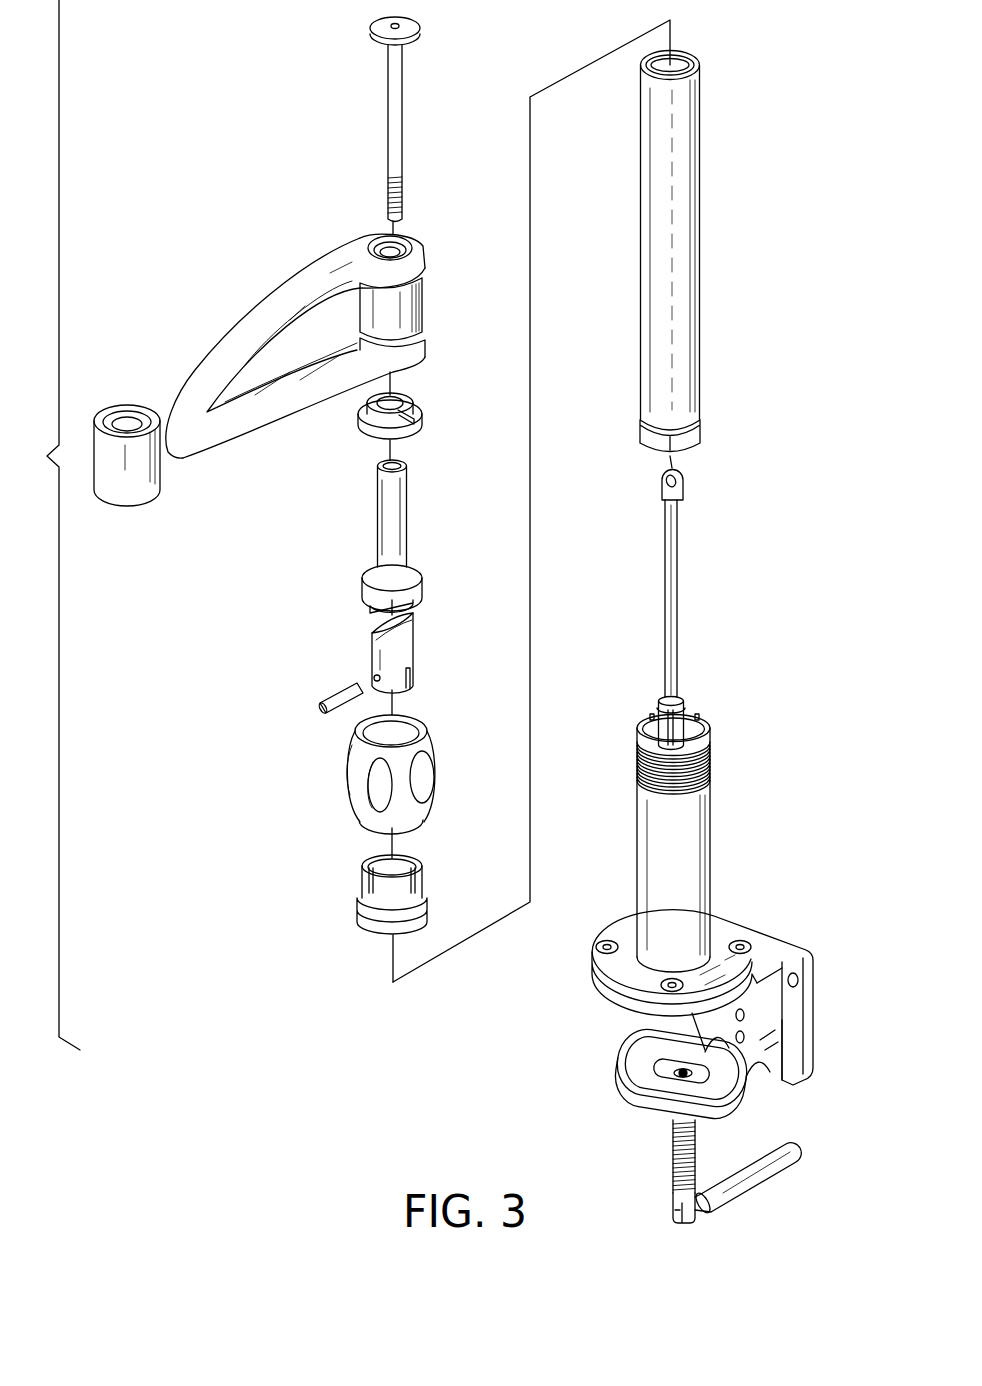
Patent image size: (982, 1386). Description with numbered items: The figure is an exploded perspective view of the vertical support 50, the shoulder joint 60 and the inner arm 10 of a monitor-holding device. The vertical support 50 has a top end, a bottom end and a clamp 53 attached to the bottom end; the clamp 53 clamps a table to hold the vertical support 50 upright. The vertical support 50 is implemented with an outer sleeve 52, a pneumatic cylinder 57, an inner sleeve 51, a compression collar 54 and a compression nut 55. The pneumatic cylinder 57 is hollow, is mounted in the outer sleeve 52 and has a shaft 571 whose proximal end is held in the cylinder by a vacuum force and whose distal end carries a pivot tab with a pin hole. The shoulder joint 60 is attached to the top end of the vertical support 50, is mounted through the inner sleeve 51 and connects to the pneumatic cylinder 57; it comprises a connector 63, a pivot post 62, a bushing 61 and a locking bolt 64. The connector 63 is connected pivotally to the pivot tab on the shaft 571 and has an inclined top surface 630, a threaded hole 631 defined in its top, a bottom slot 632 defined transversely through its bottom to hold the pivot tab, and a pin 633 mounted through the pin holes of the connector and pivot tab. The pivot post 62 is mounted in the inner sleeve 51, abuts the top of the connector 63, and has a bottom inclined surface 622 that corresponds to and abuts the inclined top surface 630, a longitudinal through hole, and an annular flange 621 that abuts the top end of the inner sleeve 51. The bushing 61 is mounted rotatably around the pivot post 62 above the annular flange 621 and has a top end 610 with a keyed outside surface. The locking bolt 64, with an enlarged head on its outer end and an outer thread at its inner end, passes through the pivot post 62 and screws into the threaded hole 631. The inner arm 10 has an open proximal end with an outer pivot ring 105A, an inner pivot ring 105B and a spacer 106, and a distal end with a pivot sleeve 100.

The inner arm 10 is at (309, 389).
The pivot sleeve 100 is at (132, 480).
The outer pivot ring 105A is at (422, 255).
The inner pivot ring 105B is at (426, 357).
The spacer 106 is at (419, 306).
The locking bolt 64 is at (397, 76).
The shoulder joint 60 is at (285, 488).
The bushing 61 is at (389, 436).
The top end 610 is at (358, 418).
The pivot post 62 is at (408, 536).
The annular flange 621 is at (372, 573).
The bottom inclined surface 622 is at (413, 597).
The connector 63 is at (383, 660).
The inclined top surface 630 is at (380, 637).
The threaded hole 631 is at (393, 627).
The bottom slot 632 is at (408, 680).
The pin 633 is at (323, 713).
The compression nut 55 is at (440, 765).
The compression collar 54 is at (422, 892).
The vertical support 50 is at (763, 0).
The inner sleeve 51 is at (689, 167).
The shaft 571 is at (680, 585).
The pneumatic cylinder 57 is at (657, 712).
The outer sleeve 52 is at (710, 762).
The clamp 53 is at (763, 930).